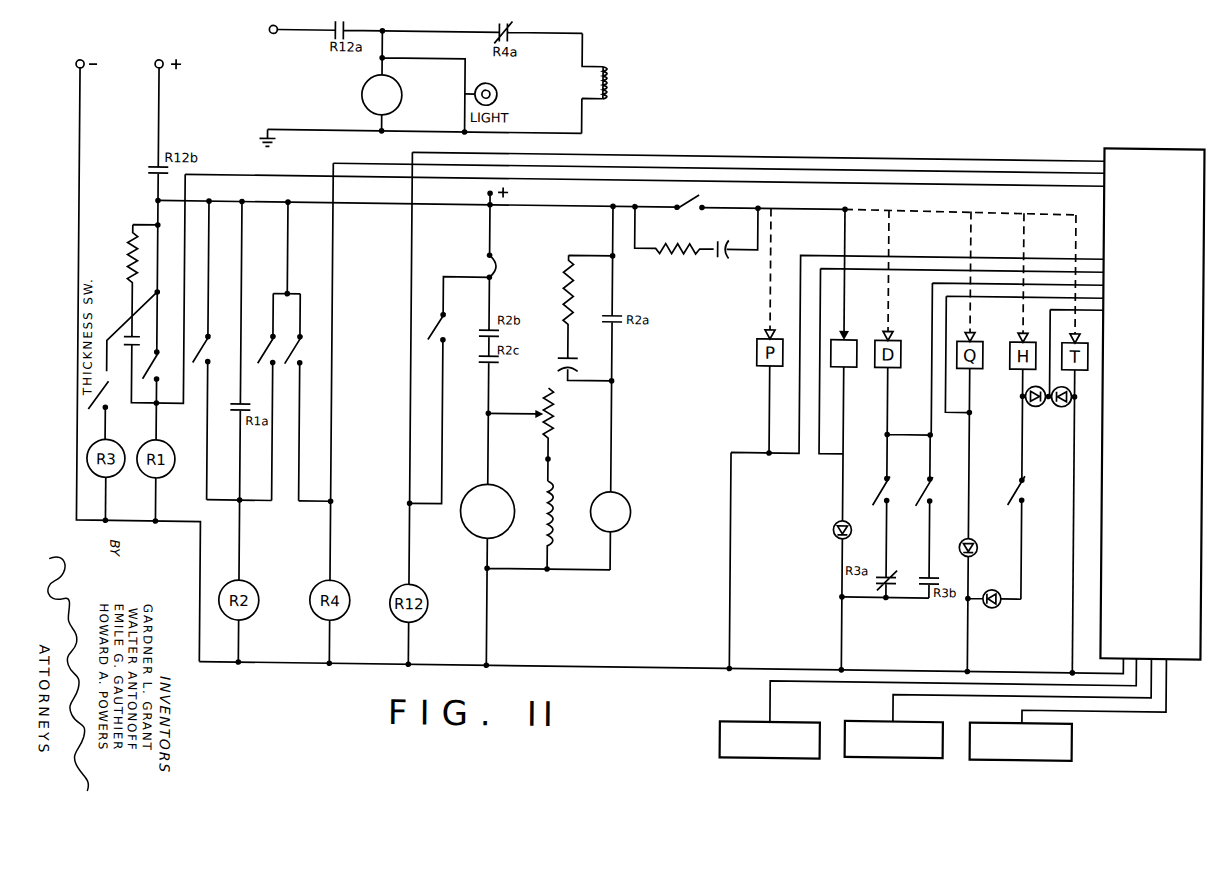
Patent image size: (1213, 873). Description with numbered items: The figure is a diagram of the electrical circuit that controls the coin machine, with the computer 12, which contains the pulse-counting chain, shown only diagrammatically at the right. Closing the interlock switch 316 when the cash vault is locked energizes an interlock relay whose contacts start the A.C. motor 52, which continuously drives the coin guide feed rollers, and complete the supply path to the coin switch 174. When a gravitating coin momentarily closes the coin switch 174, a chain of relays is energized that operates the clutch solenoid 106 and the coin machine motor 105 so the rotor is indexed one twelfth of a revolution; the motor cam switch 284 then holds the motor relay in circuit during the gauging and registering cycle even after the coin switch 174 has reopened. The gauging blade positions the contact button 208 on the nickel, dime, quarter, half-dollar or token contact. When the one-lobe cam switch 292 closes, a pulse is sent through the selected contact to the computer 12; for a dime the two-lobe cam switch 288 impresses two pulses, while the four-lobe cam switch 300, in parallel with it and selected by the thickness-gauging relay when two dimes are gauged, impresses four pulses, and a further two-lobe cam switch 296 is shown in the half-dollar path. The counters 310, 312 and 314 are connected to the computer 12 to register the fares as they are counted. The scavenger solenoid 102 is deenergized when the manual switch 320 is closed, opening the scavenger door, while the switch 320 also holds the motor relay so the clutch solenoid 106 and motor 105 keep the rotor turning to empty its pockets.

The computer 12 is at (1116, 136).
The A.C. motor 52 is at (361, 93).
The scavenger solenoid 102 is at (610, 94).
The coin machine motor 105 is at (471, 526).
The clutch solenoid 106 is at (622, 526).
The coin switch 174 is at (160, 355).
The contact button 208 is at (847, 323).
The motor cam switch 284 is at (212, 337).
The two-lobe cam switch 288 is at (877, 496).
The one-lobe cam switch 292 is at (689, 193).
The two-lobe cam switch 296 is at (1003, 481).
The four-lobe cam switch 300 is at (921, 461).
The counter 310 is at (724, 750).
The counter 312 is at (917, 748).
The counter 314 is at (1048, 749).
The interlock switch 316 is at (450, 390).
The manual switch 320 is at (299, 352).